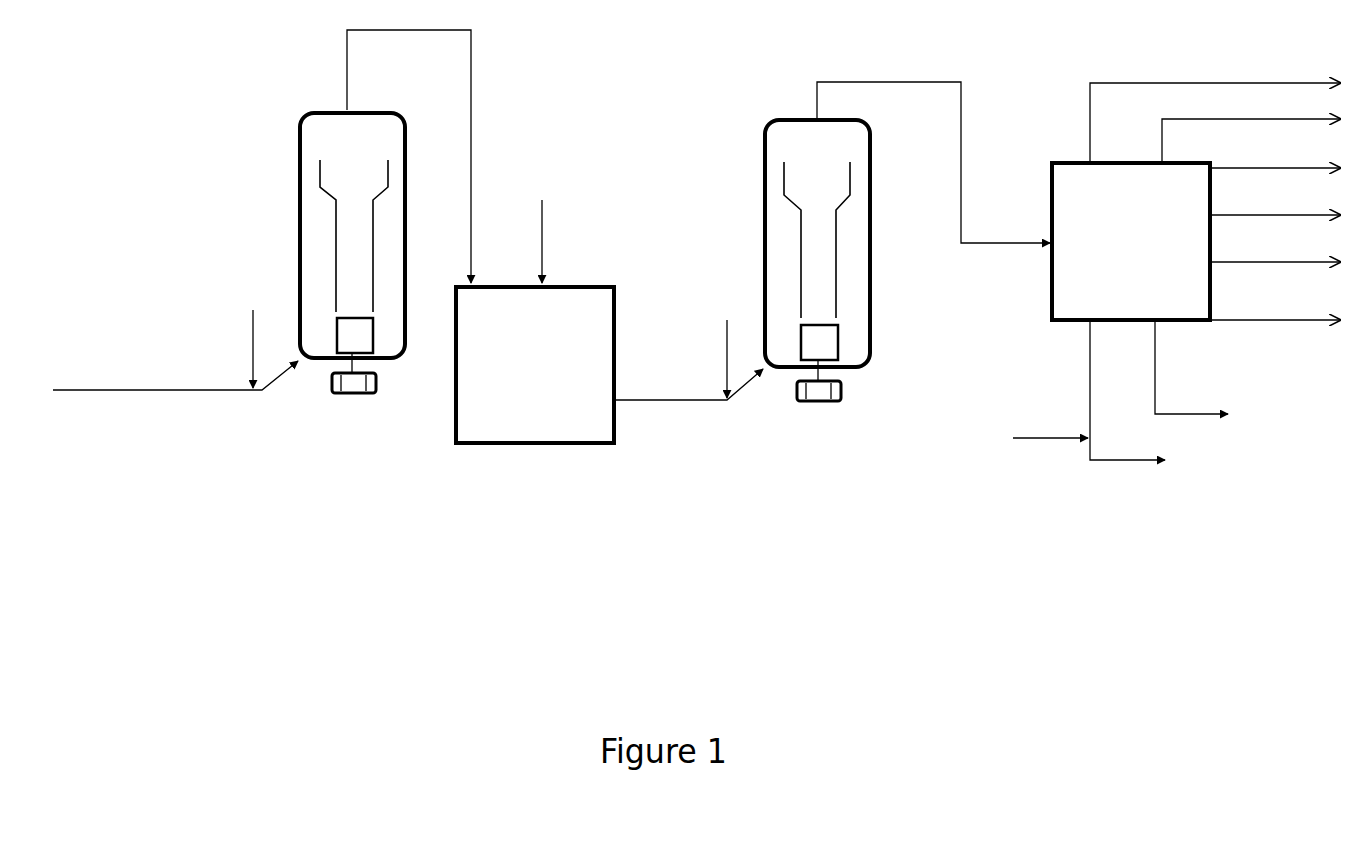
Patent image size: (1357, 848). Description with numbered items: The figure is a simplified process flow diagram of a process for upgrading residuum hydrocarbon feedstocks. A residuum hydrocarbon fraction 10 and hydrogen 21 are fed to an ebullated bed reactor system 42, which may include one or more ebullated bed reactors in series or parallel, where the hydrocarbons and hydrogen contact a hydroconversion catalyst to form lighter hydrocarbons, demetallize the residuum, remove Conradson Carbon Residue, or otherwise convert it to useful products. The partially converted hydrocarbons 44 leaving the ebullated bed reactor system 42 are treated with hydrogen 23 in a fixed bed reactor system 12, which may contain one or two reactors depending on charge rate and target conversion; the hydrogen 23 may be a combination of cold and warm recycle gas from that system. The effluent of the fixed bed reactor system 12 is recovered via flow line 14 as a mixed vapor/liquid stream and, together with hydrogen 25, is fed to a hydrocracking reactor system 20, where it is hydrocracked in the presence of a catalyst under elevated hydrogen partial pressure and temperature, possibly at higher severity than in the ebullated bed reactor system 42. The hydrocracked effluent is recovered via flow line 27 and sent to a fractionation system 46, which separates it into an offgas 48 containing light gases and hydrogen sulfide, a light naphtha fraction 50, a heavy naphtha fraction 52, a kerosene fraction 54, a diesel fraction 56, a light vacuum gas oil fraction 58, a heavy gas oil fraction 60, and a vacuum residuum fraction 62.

The residuum hydrocarbon fraction 10 is at (176, 390).
The fixed bed reactor system 12 is at (535, 365).
The flow line 14 is at (687, 400).
The hydrocracking reactor system 20 is at (817, 261).
The hydrogen 21 is at (253, 352).
The hydrogen 23 is at (542, 242).
The hydrogen 25 is at (727, 362).
The flow line 27 is at (890, 82).
The ebullated bed reactor system 42 is at (352, 253).
The partially converted hydrocarbons 44 is at (432, 30).
The fractionation system 46 is at (1131, 241).
The offgas 48 is at (1090, 118).
The light naphtha fraction 50 is at (1162, 135).
The heavy naphtha fraction 52 is at (1297, 168).
The kerosene fraction 54 is at (1290, 215).
The diesel fraction 56 is at (1297, 262).
The light vacuum gas oil fraction 58 is at (1290, 320).
The heavy gas oil fraction 60 is at (1155, 352).
The vacuum residuum fraction 62 is at (1090, 378).